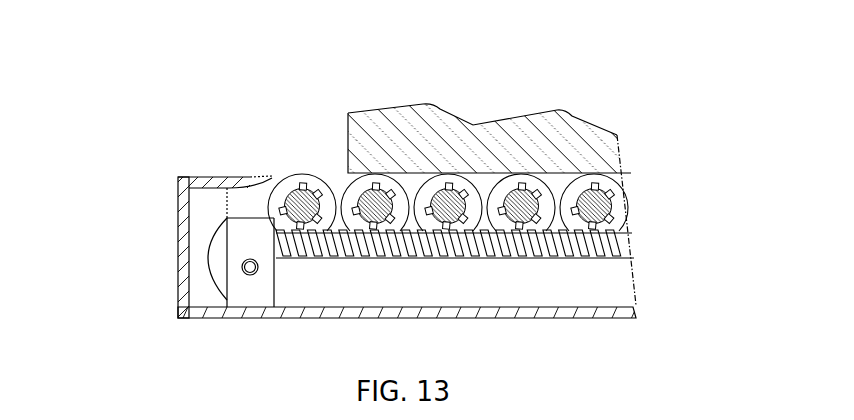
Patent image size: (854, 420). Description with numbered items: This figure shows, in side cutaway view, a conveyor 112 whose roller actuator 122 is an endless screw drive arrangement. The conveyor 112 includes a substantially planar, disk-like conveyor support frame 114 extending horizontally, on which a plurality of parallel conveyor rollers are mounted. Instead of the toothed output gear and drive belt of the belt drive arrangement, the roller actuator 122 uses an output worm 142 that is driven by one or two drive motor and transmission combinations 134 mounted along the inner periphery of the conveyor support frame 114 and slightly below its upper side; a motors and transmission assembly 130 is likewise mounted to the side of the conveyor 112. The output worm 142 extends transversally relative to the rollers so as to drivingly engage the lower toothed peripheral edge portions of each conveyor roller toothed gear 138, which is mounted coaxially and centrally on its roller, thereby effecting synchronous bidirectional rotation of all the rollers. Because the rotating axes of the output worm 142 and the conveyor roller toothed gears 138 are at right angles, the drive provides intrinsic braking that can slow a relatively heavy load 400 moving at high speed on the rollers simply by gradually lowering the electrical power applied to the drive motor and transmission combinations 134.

The conveyor 112 is at (403, 200).
The conveyor support frame 114 is at (182, 291).
The roller actuator 122 is at (280, 173).
The motors and transmission assembly 130 is at (237, 251).
The roller drive motor and transmission combination 134 is at (224, 219).
The conveyor roller toothed gear 138 is at (617, 210).
The output worm 142 is at (610, 240).
The load 400 is at (613, 158).